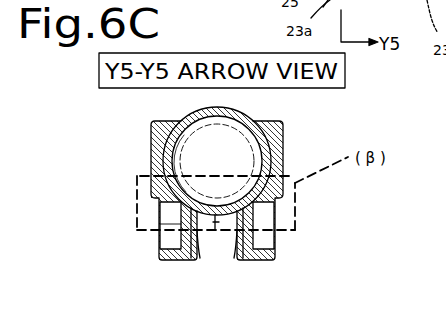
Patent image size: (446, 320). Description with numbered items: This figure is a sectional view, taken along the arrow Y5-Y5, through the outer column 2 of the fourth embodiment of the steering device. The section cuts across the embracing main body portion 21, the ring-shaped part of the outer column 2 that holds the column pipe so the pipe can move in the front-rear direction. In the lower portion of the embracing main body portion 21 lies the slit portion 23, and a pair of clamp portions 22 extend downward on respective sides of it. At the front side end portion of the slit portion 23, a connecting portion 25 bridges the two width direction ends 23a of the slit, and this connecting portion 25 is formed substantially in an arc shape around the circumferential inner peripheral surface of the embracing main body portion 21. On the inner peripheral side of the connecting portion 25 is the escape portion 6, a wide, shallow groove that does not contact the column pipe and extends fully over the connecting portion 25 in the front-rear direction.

The outer column 2 is at (268, 114).
The embracing main body portion 21 is at (200, 116).
The escape portion 6 is at (213, 199).
The clamp portions 22 is at (160, 259).
The slit portion 23 is at (215, 231).
The width direction ends 23a is at (198, 252).
The connecting portion 25 is at (188, 227).